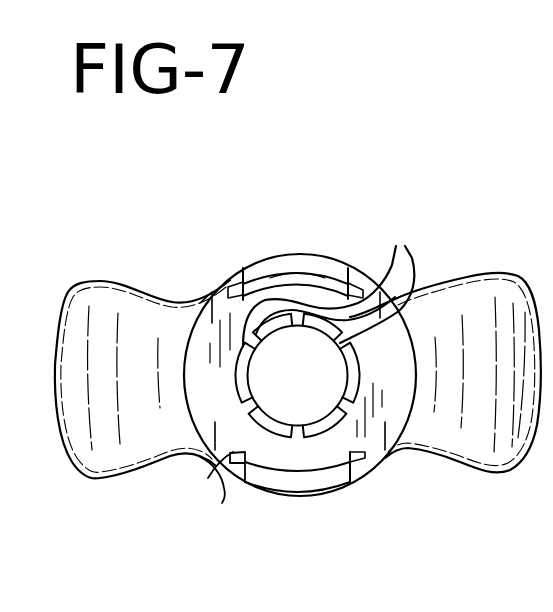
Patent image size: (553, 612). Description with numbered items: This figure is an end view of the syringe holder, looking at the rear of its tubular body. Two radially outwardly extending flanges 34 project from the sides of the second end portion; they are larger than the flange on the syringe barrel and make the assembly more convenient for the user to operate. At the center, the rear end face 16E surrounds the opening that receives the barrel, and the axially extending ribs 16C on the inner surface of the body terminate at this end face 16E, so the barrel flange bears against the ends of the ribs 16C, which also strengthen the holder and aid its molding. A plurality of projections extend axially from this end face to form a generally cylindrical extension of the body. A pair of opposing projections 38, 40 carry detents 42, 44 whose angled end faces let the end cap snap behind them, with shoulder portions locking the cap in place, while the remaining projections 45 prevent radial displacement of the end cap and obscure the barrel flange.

The flanges 34 is at (107, 281).
The projection 38 is at (258, 271).
The projection 40 is at (302, 487).
The detent 42 is at (303, 276).
The detent 44 is at (213, 420).
The projections 45 is at (198, 323).
The ribs 16C is at (332, 281).
The end face 16E is at (205, 454).